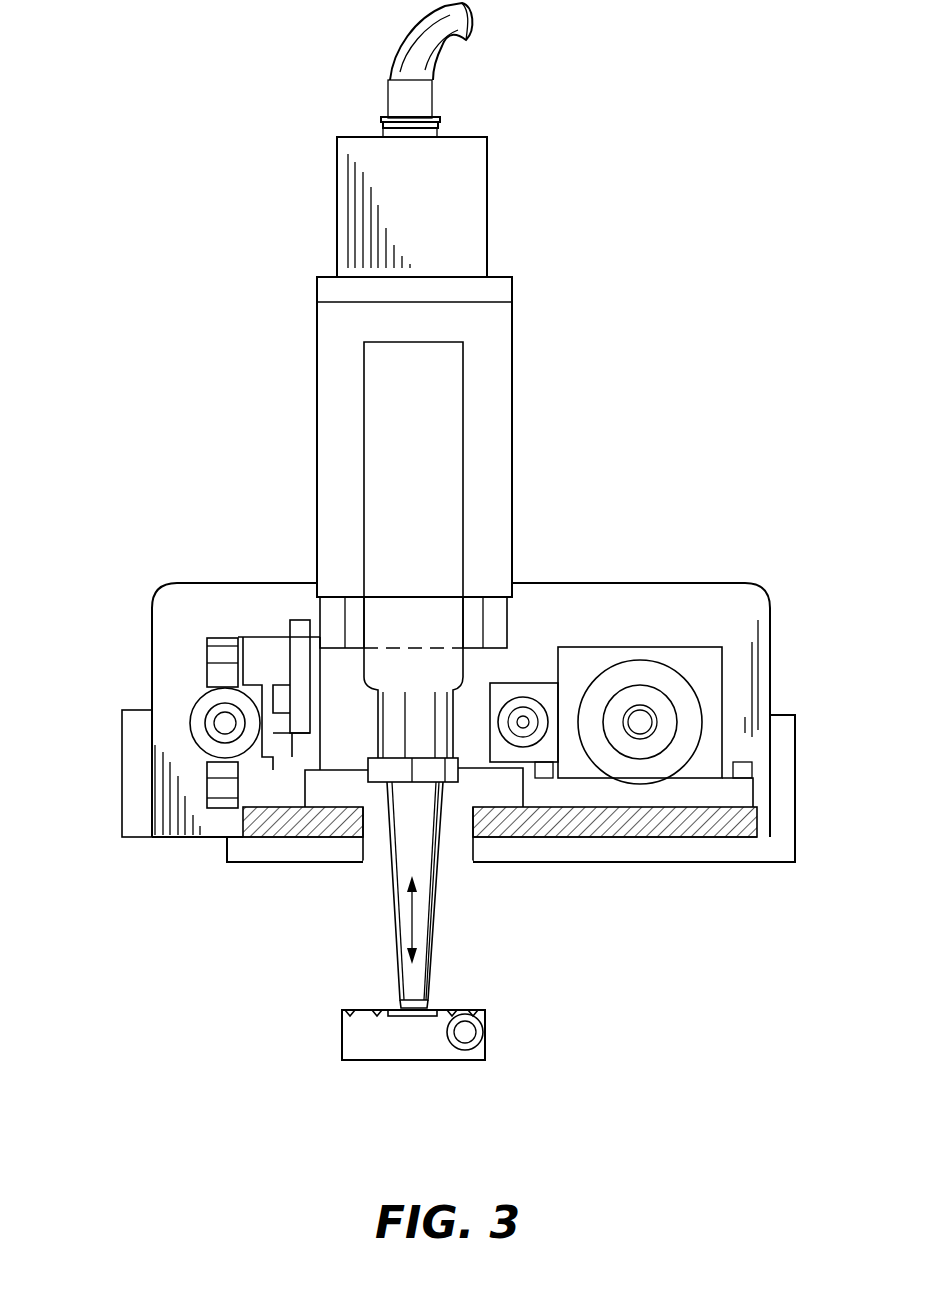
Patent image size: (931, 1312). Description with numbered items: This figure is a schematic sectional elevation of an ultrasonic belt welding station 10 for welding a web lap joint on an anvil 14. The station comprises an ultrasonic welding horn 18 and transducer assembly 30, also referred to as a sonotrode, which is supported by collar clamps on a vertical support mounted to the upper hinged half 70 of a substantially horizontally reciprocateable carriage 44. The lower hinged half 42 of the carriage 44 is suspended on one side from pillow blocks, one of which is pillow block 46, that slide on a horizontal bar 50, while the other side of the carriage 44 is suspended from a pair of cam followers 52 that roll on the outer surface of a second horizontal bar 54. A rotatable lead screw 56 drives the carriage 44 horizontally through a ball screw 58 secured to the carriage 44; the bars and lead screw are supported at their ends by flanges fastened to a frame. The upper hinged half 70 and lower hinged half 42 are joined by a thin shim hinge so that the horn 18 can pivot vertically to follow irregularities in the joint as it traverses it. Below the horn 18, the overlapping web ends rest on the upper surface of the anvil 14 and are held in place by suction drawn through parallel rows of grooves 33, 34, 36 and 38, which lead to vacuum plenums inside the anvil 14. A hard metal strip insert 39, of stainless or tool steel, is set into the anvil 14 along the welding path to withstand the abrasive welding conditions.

The ultrasonic belt welding station 10 is at (208, 224).
The anvil 14 is at (342, 1036).
The ultrasonic welding horn 18 is at (433, 898).
The transducer assembly 30 is at (545, 370).
The groove 33 is at (350, 1010).
The groove 34 is at (377, 1010).
The groove 36 is at (453, 1010).
The groove 38 is at (473, 1012).
The hard metal strip insert 39 is at (410, 1014).
The lower hinged half 42 is at (703, 850).
The horizontally reciprocateable carriage 44 is at (265, 612).
The pillow block 46 is at (723, 707).
The horizontal bar 50 is at (653, 670).
The cam follower 52 is at (215, 665).
The horizontal bar 54 is at (200, 732).
The rotatable lead screw 56 is at (521, 715).
The ball screw 58 is at (537, 683).
The upper hinged half 70 is at (757, 825).